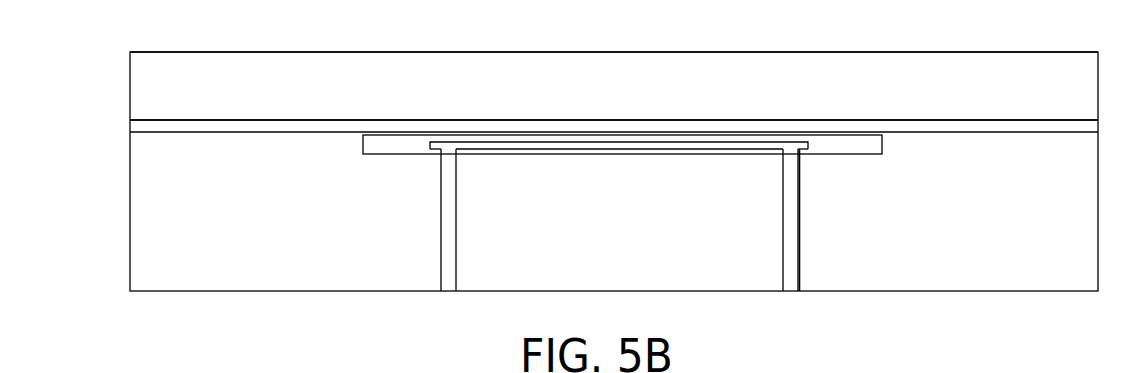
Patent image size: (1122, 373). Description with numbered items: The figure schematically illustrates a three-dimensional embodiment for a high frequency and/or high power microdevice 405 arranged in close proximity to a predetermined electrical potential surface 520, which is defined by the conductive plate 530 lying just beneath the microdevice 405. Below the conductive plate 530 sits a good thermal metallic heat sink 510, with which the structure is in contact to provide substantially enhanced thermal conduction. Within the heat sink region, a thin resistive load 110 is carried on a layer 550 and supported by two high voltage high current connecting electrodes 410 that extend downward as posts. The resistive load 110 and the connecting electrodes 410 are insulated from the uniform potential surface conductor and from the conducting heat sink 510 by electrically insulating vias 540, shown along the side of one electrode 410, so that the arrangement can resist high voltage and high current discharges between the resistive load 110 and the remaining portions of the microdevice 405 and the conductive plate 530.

The resistive load 110 is at (706, 141).
The microdevice 405 is at (200, 98).
The high voltage high current connecting electrodes 410 is at (448, 248).
The thermal metallic heat sink 510 is at (204, 228).
The predetermined electrical potential surface 520 is at (296, 113).
The conductive plate 530 is at (139, 126).
The electrically insulating vias 540 is at (800, 207).
The intermediate layer 550 is at (377, 145).